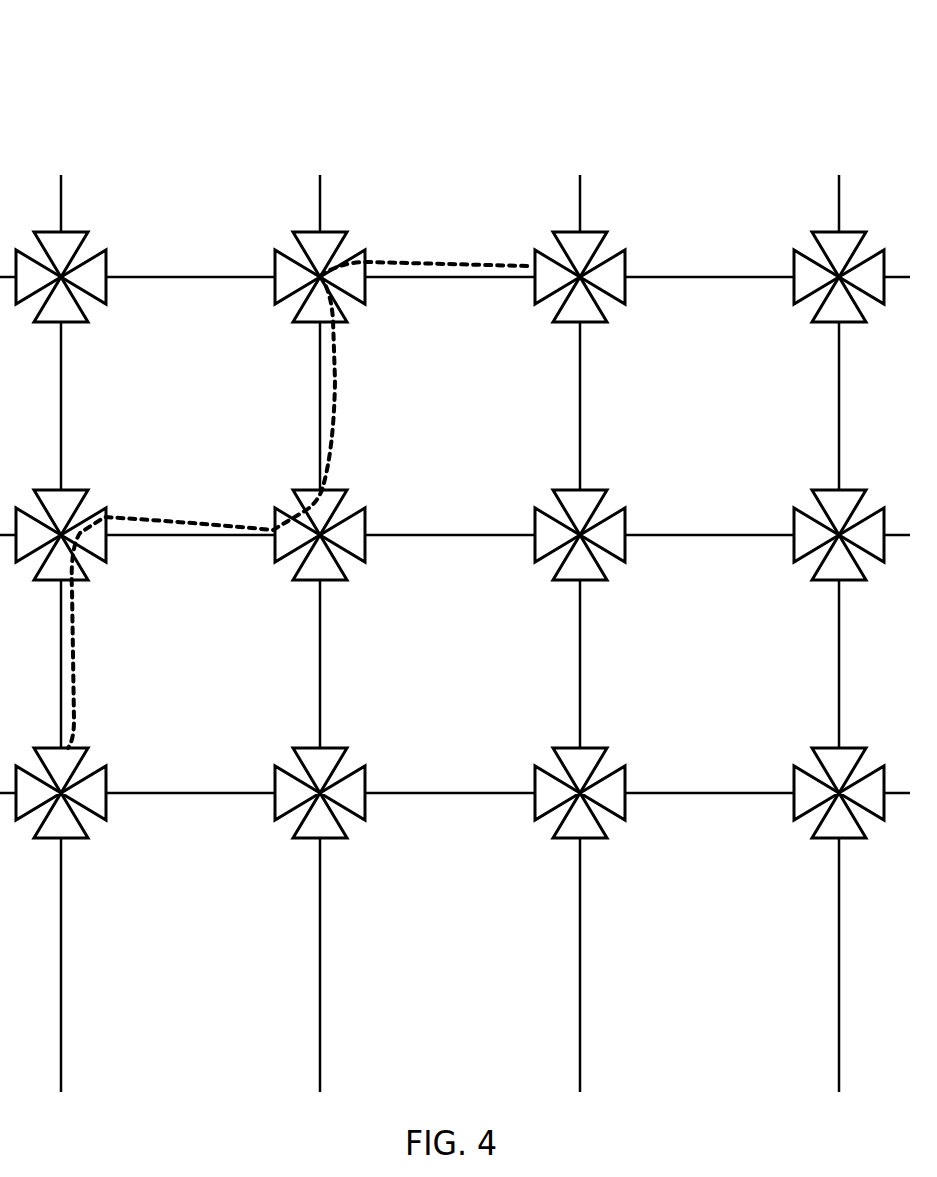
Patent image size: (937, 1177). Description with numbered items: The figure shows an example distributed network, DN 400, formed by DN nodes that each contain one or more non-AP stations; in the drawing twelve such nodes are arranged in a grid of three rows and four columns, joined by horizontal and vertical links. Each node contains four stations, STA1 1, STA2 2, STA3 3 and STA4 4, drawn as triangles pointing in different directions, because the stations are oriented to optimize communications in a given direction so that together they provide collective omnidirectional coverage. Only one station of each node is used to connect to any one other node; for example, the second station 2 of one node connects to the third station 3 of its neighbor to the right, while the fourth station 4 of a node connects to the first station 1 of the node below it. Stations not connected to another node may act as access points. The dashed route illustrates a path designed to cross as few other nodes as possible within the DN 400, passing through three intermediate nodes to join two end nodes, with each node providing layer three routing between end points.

The distributed network (DN) 400 is at (109, 67).
The station STA1 1 is at (450, 512).
The station STA2 2 is at (472, 535).
The station STA3 3 is at (427, 535).
The station STA4 4 is at (450, 557).